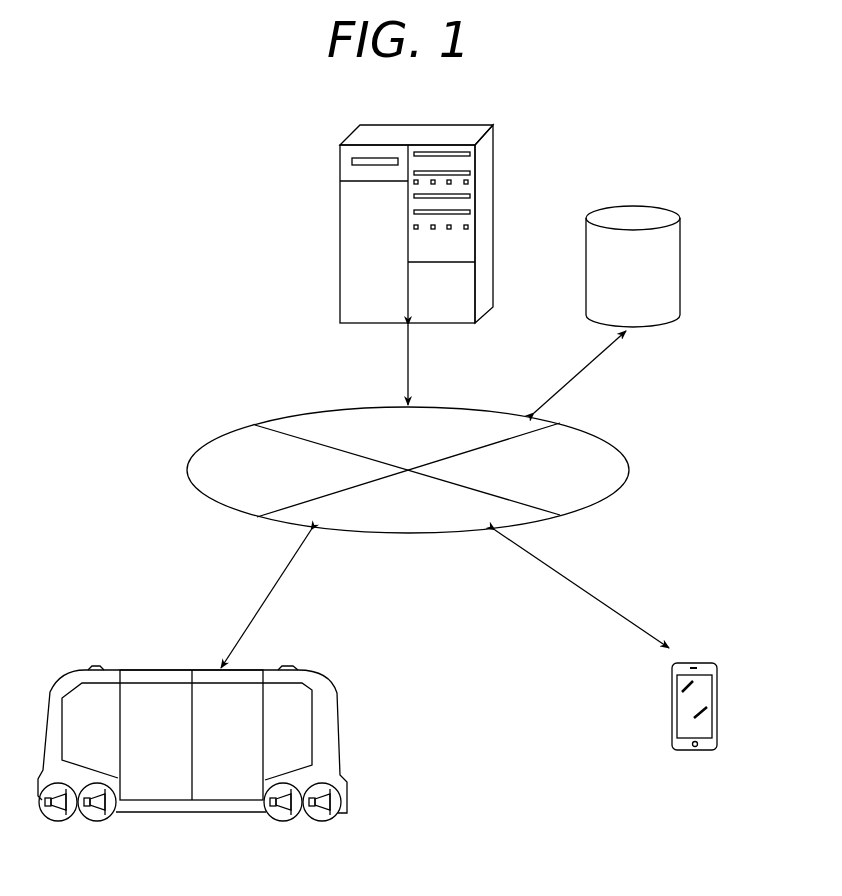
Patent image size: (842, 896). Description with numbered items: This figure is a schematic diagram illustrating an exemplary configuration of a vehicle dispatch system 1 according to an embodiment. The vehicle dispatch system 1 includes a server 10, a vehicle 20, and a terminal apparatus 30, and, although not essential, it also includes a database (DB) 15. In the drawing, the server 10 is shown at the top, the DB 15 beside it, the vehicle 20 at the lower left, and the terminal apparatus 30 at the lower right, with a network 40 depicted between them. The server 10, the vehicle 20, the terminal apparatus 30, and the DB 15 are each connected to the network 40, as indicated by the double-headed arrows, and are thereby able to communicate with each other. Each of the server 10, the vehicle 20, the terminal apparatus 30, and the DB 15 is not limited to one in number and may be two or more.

The vehicle dispatch system 1 is at (181, 323).
The server 10 is at (340, 229).
The database (DB) 15 is at (681, 271).
The vehicle 20 is at (170, 670).
The terminal apparatus 30 is at (718, 705).
The network 40 is at (629, 467).